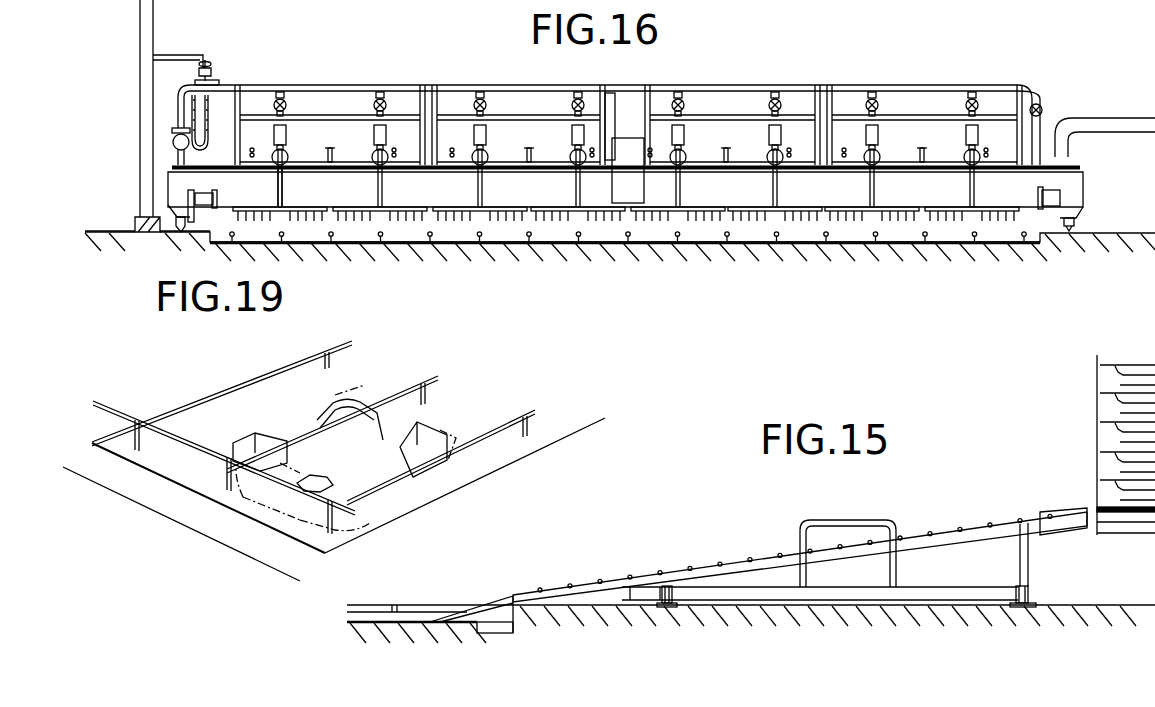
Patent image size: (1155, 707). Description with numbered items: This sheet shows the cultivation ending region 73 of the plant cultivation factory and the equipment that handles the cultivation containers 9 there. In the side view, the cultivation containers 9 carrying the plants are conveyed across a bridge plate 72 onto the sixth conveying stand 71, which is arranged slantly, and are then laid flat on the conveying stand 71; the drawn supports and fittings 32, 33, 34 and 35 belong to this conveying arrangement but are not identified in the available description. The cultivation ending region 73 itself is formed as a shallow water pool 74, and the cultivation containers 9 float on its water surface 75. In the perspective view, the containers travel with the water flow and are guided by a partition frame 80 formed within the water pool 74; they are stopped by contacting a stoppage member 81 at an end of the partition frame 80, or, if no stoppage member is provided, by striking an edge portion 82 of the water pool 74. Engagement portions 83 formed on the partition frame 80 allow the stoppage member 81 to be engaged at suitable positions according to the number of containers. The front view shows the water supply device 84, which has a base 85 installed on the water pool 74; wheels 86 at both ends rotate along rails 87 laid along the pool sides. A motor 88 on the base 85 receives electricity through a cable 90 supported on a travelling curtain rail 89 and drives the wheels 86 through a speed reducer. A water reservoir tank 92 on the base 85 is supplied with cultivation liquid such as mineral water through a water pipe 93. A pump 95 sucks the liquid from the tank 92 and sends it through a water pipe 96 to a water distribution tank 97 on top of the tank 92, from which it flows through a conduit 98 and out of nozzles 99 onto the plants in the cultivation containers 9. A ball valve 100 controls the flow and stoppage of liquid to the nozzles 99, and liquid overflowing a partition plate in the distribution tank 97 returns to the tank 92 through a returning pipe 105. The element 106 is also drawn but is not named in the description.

In FIG. 19, the cultivation container 9 is at (453, 529).
In FIG. 15, the cultivation container 9 is at (1093, 451).
In FIG. 15, the support post 32 is at (1030, 555).
In FIG. 15, the ramp end plate 33 is at (1038, 528).
In FIG. 15, the roller 34 is at (1016, 588).
In FIG. 15, the base plate 35 is at (1033, 604).
In FIG. 15, the sixth conveying stand 71 is at (936, 530).
In FIG. 15, the bridge plate 72 is at (485, 605).
In FIG. 16, the cultivation ending region 73 is at (163, 234).
In FIG. 19, the cultivation ending region 73 is at (541, 440).
In FIG. 15, the cultivation ending region 73 is at (398, 623).
In FIG. 16, the water pool 74 is at (218, 243).
In FIG. 19, the water pool 74 is at (474, 473).
In FIG. 15, the water pool 74 is at (481, 626).
In FIG. 16, the water surface 75 is at (313, 238).
In FIG. 16, the partition frame 80 is at (386, 222).
In FIG. 19, the partition frame 80 is at (364, 496).
In FIG. 19, the stoppage member 81 is at (283, 476).
In FIG. 19, the edge portion 82 is at (308, 549).
In FIG. 19, the engagement portion 83 is at (262, 356).
In FIG. 16, the water supply device 84 is at (628, 110).
In FIG. 16, the base 85 is at (173, 181).
In FIG. 16, the wheels 86 is at (194, 226).
In FIG. 16, the rails 87 is at (180, 234).
In FIG. 16, the motor 88 is at (207, 202).
In FIG. 16, the travelling curtain rail 89 is at (207, 66).
In FIG. 16, the cable 90 is at (212, 100).
In FIG. 16, the water reservoir tank 92 is at (280, 156).
In FIG. 16, the water pipe 93 is at (1082, 125).
In FIG. 16, the pump 95 is at (172, 140).
In FIG. 16, the water pipe 96 is at (444, 96).
In FIG. 16, the water distribution tank 97 is at (307, 127).
In FIG. 16, the conduit 98 is at (282, 185).
In FIG. 16, the nozzles 99 is at (287, 235).
In FIG. 16, the ball valve 100 is at (374, 133).
In FIG. 16, the returning pipe 105 is at (331, 150).
In FIG. 16, the control box 106 is at (610, 100).